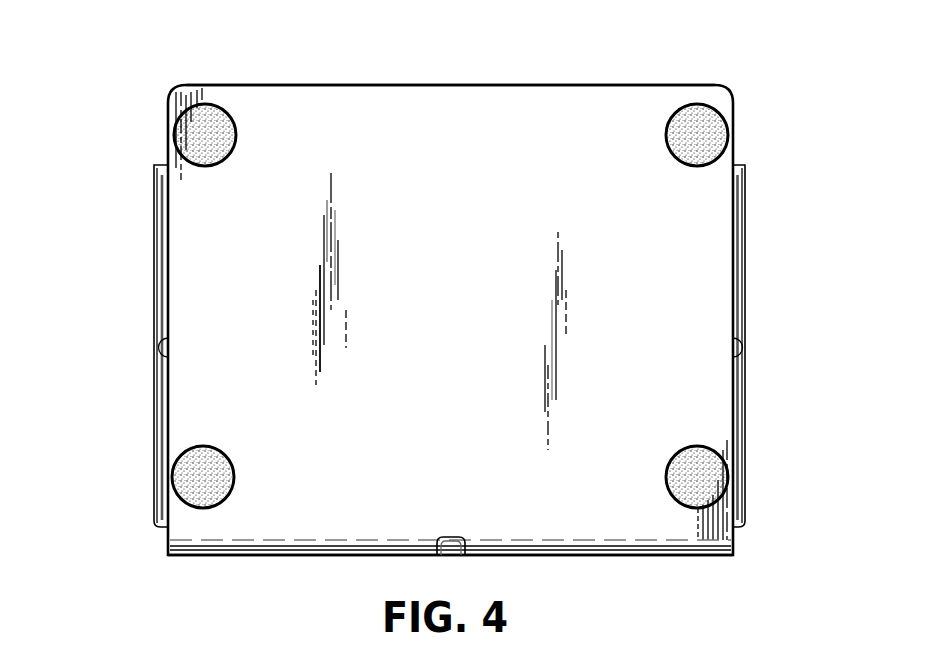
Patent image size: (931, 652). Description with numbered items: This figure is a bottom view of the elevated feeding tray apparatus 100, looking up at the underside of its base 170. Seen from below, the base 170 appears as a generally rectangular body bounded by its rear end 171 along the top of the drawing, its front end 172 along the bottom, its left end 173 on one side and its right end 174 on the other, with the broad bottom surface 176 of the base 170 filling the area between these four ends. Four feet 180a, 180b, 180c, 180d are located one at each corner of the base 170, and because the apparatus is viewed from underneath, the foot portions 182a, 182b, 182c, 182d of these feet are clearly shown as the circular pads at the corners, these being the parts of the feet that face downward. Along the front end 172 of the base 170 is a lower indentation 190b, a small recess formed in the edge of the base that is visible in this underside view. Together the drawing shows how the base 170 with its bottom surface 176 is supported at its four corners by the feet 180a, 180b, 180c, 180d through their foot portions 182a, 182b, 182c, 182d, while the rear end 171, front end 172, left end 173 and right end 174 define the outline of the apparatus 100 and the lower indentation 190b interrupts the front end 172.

The elevated feeding tray apparatus 100 is at (455, 332).
The base 170 is at (225, 368).
The rear end 171 is at (438, 110).
The front end 172 is at (415, 545).
The left end 173 is at (720, 331).
The right end 174 is at (183, 318).
The bottom surface 176 is at (456, 334).
The foot 180a is at (681, 508).
The foot 180b is at (664, 128).
The foot 180c is at (236, 116).
The foot 180d is at (209, 512).
The foot portion 182a is at (718, 475).
The foot portion 182b is at (714, 132).
The foot portion 182c is at (182, 133).
The foot portion 182d is at (185, 476).
The lower indentation 190b is at (450, 549).